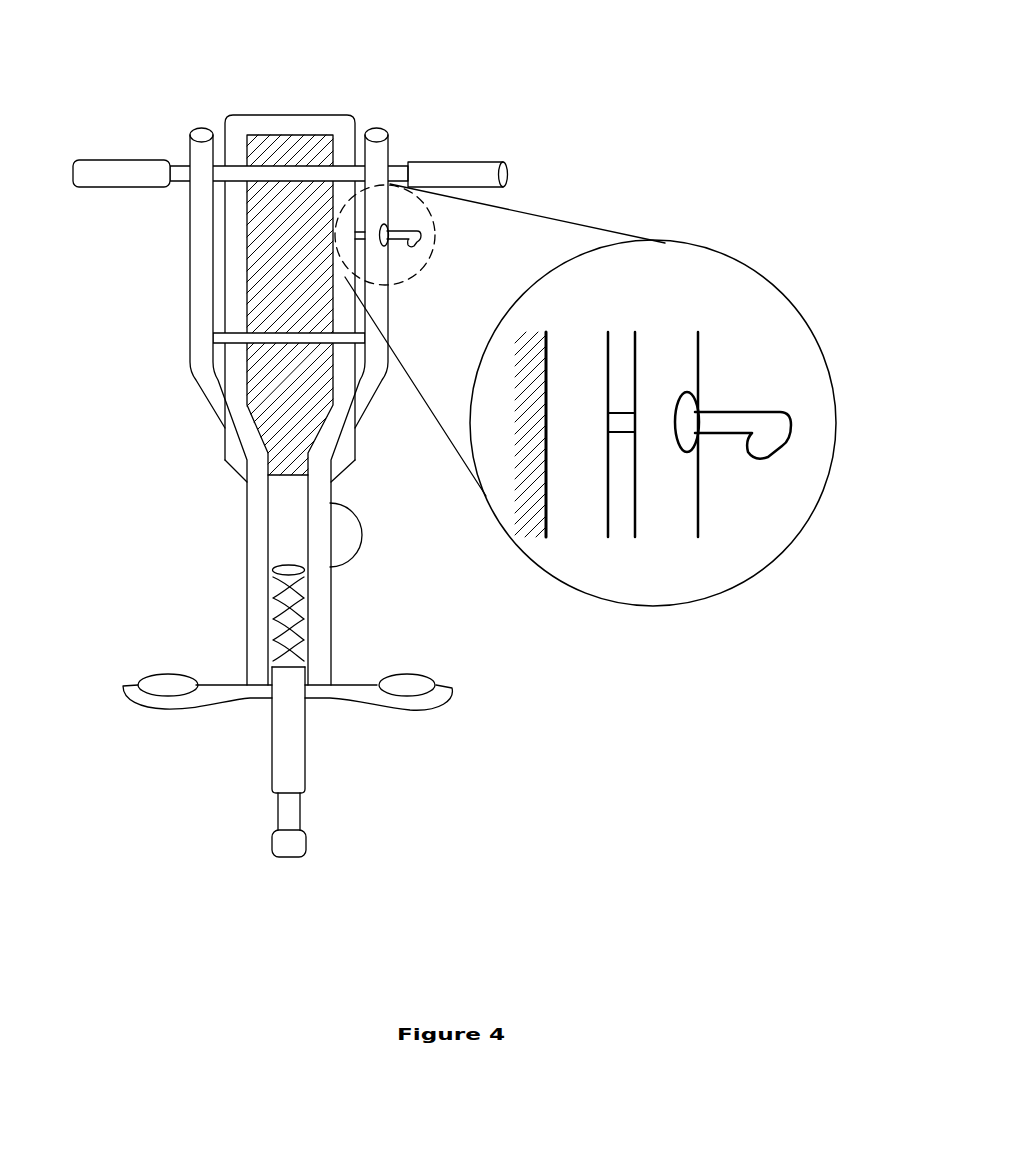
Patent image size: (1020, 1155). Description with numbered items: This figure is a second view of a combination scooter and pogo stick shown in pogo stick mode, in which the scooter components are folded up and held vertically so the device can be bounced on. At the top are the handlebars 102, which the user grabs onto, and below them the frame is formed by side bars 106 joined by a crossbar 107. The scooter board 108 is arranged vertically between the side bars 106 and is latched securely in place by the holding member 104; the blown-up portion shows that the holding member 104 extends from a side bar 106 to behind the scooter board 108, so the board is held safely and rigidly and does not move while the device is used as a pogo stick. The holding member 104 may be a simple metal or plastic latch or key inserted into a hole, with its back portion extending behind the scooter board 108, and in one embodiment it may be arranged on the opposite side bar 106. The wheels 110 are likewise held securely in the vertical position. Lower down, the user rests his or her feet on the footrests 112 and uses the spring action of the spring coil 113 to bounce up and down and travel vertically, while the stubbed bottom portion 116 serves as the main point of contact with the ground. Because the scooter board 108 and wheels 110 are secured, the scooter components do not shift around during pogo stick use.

The handlebars 102 is at (113, 162).
The holding member 104 is at (437, 234).
The side bars 106 is at (366, 303).
The crossbar 107 is at (274, 348).
The scooter board 108 is at (300, 134).
The wheels 110 is at (360, 145).
The footrests 112 is at (197, 677).
The spring coil 113 is at (268, 603).
The stubbed bottom portion 116 is at (268, 755).